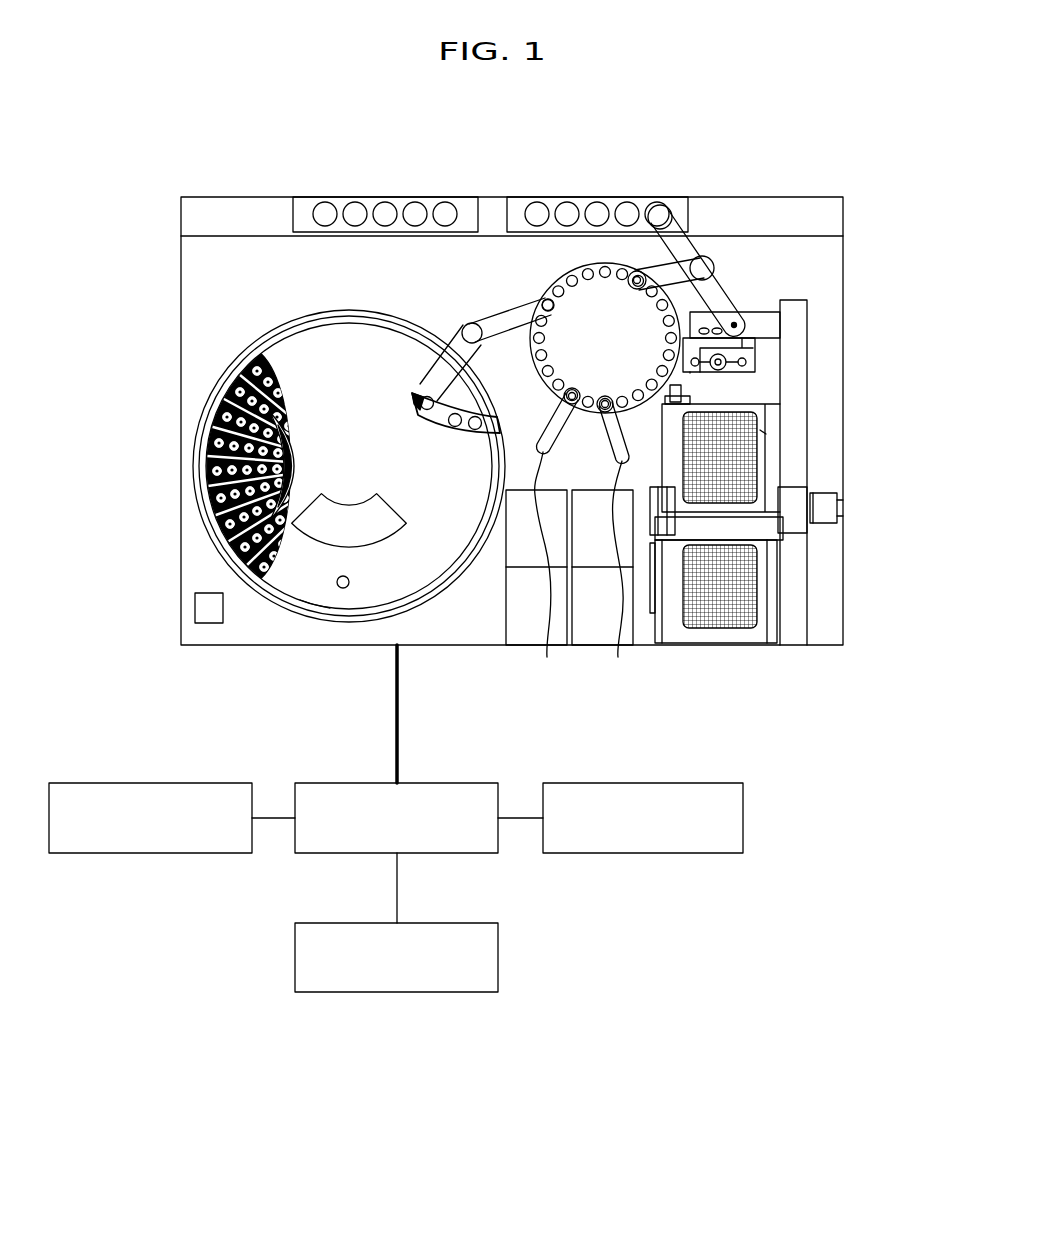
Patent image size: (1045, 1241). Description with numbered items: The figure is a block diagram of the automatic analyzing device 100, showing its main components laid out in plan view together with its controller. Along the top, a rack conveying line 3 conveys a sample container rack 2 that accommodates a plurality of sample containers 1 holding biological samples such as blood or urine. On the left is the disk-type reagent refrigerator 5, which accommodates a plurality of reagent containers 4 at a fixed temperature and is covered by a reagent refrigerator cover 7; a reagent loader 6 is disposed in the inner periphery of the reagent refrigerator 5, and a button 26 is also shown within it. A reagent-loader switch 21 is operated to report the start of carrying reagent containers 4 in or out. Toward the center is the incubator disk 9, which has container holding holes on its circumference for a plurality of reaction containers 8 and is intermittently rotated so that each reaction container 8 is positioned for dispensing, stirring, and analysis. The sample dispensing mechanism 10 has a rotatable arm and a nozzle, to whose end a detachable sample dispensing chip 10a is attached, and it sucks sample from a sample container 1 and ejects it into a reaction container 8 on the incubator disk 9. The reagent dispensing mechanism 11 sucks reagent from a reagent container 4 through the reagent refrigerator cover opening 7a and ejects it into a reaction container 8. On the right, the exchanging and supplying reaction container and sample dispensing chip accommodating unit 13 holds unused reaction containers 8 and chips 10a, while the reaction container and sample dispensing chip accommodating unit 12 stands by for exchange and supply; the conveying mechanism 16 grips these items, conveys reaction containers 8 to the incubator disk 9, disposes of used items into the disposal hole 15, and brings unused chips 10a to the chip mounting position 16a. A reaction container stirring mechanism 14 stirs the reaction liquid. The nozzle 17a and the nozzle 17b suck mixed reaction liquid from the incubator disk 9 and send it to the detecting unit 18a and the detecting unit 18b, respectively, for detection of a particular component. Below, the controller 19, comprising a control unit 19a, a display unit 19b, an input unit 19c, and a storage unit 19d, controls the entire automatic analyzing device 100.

The sample container 1 is at (357, 204).
The sample container rack 2 is at (303, 203).
The rack conveying line 3 is at (217, 203).
The reagent container 4 is at (210, 432).
The reagent refrigerator 5 is at (290, 302).
The reagent loader 6 is at (350, 505).
The reagent refrigerator cover 7 is at (313, 597).
The reagent refrigerator cover opening 7a is at (437, 437).
The reaction container 8 is at (604, 266).
The incubator disk 9 is at (545, 273).
The sample dispensing mechanism 10 is at (690, 247).
The sample dispensing chip 10a is at (763, 432).
The reagent dispensing mechanism 11 is at (491, 338).
The reaction container and sample dispensing chip accommodating unit 12 is at (770, 590).
The exchanging and supplying reaction container and sample dispensing chip accommoda 13 is at (770, 466).
The reaction container stirring mechanism 14 is at (690, 373).
The disposal hole 15 is at (722, 320).
The conveying mechanism 16 is at (765, 316).
The chip mounting position 16a is at (697, 374).
The nozzle 17a is at (552, 540).
The nozzle 17b is at (621, 544).
The detecting unit 18a is at (515, 640).
The detecting unit 18b is at (592, 645).
The controller 19 is at (565, 944).
The control unit 19a is at (373, 783).
The display unit 19b is at (80, 783).
The input unit 19c is at (472, 992).
The storage unit 19d is at (729, 783).
The reagent-loader switch 21 is at (195, 608).
The button 26 is at (349, 580).
The automatic analyzing device 100 is at (745, 699).